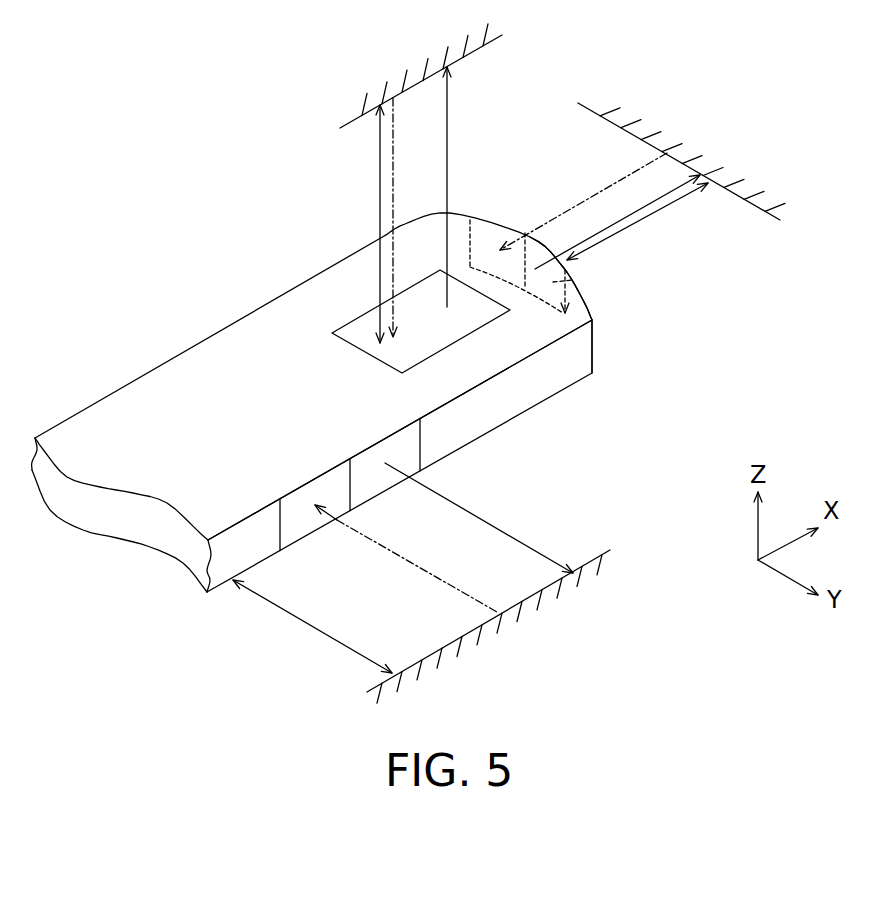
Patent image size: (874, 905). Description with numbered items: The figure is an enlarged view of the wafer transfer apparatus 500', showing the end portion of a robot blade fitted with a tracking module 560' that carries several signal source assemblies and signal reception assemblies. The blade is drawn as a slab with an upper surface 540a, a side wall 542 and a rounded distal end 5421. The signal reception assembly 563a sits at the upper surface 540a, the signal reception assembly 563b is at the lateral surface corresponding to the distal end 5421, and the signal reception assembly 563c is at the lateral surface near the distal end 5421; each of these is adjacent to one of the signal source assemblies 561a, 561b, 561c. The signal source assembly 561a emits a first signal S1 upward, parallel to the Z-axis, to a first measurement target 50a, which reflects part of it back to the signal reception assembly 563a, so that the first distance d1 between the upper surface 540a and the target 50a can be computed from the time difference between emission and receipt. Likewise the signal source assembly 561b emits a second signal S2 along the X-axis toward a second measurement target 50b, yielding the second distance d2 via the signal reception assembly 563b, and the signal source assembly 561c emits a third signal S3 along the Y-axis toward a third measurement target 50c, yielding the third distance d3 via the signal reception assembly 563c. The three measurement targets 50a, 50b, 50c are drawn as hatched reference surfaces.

The wafer transfer apparatus 500' is at (368, 353).
The tracking module 560' is at (368, 381).
The upper surface 540a is at (215, 375).
The side surface 542 is at (457, 370).
The distal end 5421 is at (592, 306).
The signal source assembly 561a is at (477, 310).
The signal source assembly 561b is at (573, 280).
The signal source assembly 561c is at (370, 485).
The signal reception assembly 563a is at (362, 333).
The signal reception assembly 563b is at (492, 237).
The signal reception assembly 563c is at (300, 525).
The first measurement target 50a is at (473, 53).
The second measurement target 50b is at (768, 213).
The third measurement target 50c is at (598, 553).
The first signal S1 is at (450, 125).
The second signal S2 is at (660, 195).
The third signal S3 is at (480, 517).
The first distance d1 is at (369, 220).
The second distance d2 is at (637, 221).
The third distance d3 is at (312, 626).